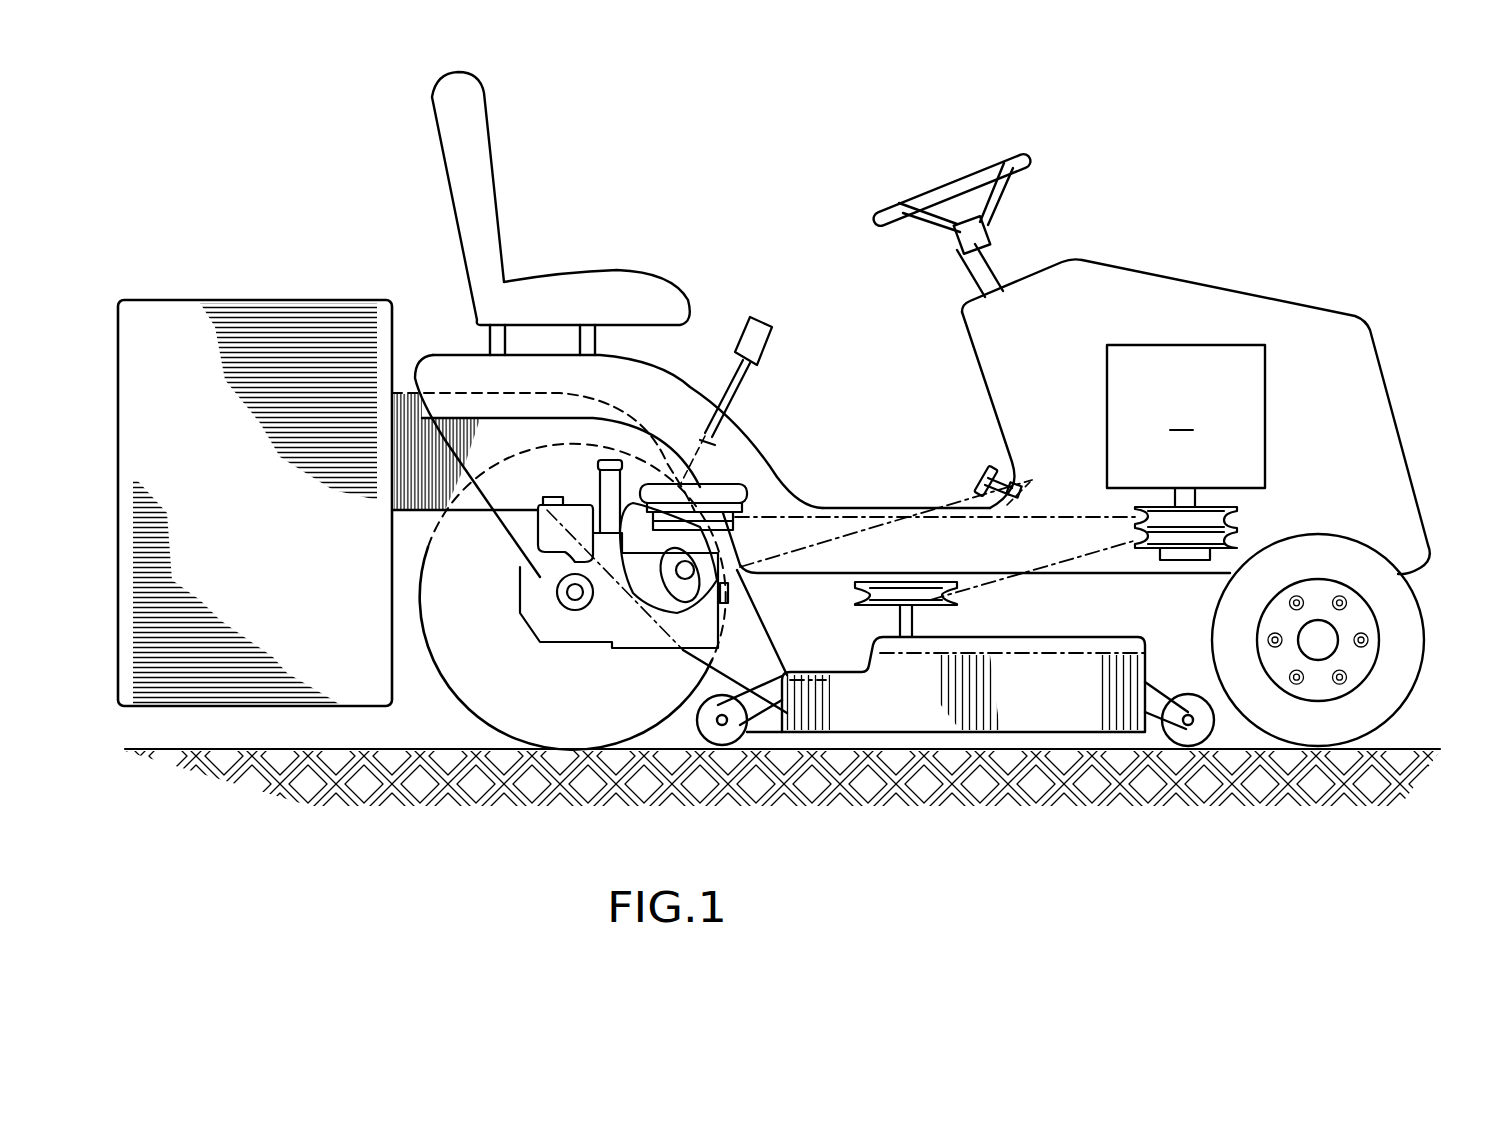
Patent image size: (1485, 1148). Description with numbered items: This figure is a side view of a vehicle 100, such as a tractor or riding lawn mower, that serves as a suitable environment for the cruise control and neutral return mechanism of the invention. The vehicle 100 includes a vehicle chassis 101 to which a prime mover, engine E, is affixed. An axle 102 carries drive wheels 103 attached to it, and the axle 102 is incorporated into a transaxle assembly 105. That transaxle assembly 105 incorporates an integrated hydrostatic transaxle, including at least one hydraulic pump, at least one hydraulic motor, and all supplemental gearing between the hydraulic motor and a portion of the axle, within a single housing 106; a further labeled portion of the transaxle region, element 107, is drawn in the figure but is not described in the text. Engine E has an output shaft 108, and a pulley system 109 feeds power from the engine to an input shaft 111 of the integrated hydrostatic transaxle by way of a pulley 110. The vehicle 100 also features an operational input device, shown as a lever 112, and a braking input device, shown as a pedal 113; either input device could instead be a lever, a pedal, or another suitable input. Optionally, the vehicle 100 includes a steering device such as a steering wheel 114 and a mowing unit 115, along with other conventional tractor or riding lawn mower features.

The vehicle 100 is at (1125, 205).
The vehicle chassis 101 is at (810, 575).
The axle 102 is at (573, 593).
The drive wheels 103 is at (458, 603).
The transaxle assembly 105 is at (513, 526).
The housing 106 is at (540, 576).
The transaxle 107 is at (643, 615).
The output shaft 108 is at (1250, 526).
The pulley system 109 is at (1192, 498).
The pulley 110 is at (735, 515).
The input shaft 111 is at (757, 538).
The lever 112 is at (750, 337).
The pedal 113 is at (988, 478).
The steering wheel 114 is at (937, 197).
The mowing unit 115 is at (1040, 703).